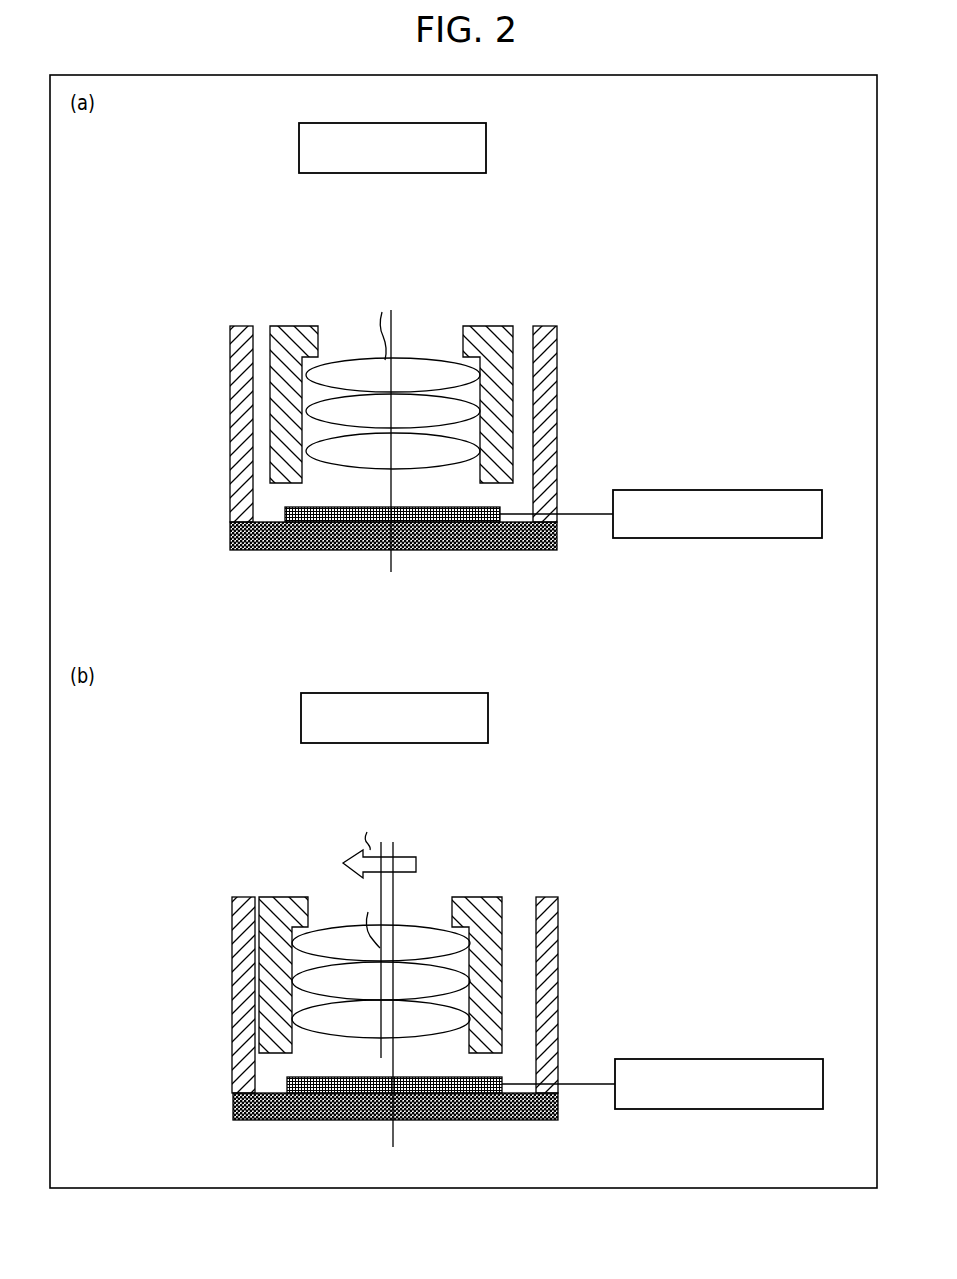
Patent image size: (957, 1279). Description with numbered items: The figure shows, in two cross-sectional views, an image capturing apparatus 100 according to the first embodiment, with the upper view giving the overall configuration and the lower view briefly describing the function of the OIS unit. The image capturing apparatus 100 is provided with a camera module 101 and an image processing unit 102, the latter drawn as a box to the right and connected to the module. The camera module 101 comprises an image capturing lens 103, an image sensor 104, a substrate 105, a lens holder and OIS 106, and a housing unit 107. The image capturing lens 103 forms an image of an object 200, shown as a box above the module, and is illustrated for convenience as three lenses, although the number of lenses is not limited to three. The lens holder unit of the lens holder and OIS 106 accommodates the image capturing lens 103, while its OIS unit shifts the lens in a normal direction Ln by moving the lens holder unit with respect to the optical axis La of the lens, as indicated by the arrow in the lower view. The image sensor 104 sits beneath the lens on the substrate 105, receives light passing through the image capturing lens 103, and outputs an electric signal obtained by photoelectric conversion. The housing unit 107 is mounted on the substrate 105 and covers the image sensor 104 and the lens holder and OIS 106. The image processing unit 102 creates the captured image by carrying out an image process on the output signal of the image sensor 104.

The image capturing apparatus 100 is at (625, 338).
The camera module 101 is at (222, 1123).
The image processing unit 102 is at (755, 490).
The image capturing lens 103 is at (327, 927).
The image sensor 104 is at (477, 522).
The substrate 105 is at (268, 551).
The lens holder and OIS 106 is at (493, 897).
The housing unit 107 is at (557, 388).
The object 200 is at (447, 123).